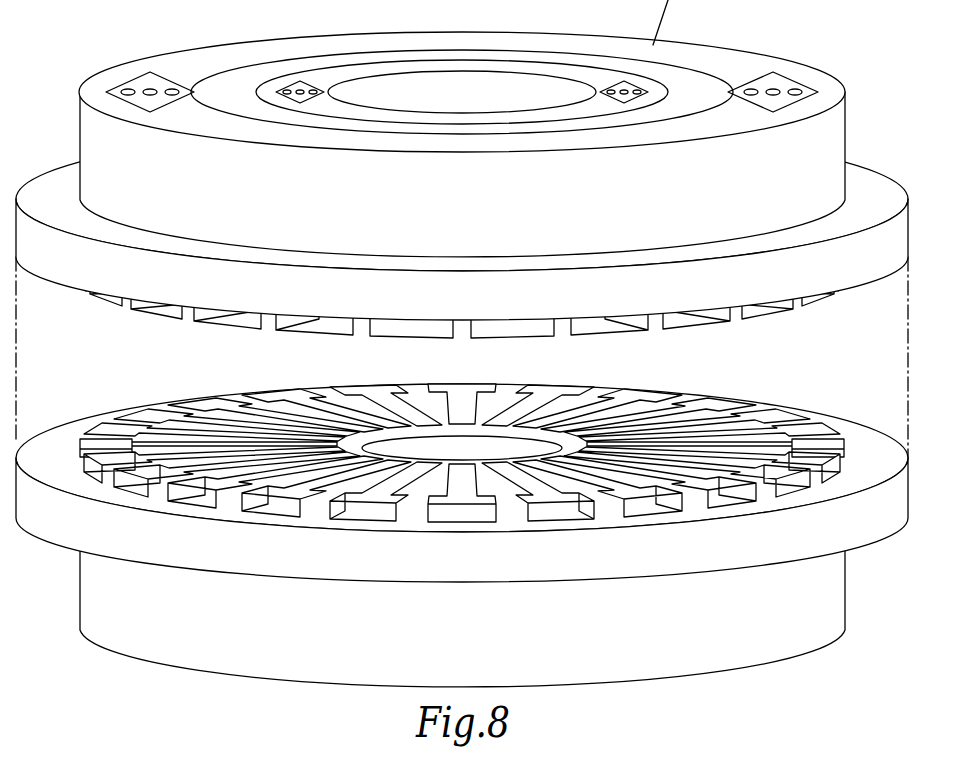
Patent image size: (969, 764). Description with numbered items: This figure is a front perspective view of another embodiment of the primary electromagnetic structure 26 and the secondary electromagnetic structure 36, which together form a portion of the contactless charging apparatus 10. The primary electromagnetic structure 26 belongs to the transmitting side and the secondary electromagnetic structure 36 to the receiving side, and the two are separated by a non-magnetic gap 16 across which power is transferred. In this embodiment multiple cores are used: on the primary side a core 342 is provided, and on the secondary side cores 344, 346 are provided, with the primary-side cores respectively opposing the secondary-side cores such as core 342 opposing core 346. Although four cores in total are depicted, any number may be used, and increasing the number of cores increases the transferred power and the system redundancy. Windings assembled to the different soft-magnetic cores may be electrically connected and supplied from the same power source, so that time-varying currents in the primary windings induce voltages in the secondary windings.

The contactless charging apparatus 10 is at (112, 338).
The non-magnetic gap 16 is at (300, 335).
The primary electromagnetic structure 26 is at (451, 128).
The secondary electromagnetic structure 36 is at (150, 677).
The core 342 is at (565, 70).
The core 344 is at (703, 397).
The core 346 is at (503, 418).